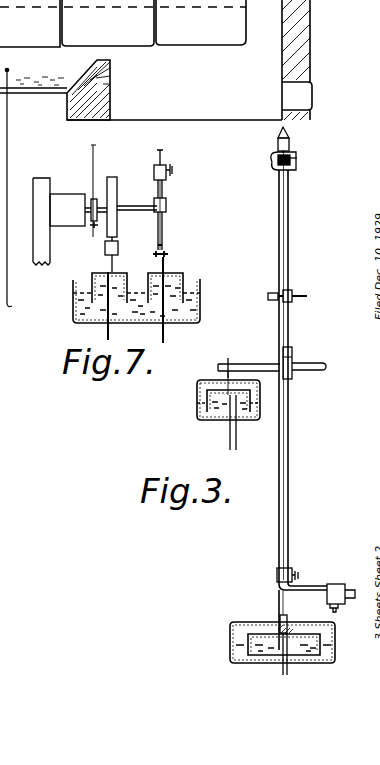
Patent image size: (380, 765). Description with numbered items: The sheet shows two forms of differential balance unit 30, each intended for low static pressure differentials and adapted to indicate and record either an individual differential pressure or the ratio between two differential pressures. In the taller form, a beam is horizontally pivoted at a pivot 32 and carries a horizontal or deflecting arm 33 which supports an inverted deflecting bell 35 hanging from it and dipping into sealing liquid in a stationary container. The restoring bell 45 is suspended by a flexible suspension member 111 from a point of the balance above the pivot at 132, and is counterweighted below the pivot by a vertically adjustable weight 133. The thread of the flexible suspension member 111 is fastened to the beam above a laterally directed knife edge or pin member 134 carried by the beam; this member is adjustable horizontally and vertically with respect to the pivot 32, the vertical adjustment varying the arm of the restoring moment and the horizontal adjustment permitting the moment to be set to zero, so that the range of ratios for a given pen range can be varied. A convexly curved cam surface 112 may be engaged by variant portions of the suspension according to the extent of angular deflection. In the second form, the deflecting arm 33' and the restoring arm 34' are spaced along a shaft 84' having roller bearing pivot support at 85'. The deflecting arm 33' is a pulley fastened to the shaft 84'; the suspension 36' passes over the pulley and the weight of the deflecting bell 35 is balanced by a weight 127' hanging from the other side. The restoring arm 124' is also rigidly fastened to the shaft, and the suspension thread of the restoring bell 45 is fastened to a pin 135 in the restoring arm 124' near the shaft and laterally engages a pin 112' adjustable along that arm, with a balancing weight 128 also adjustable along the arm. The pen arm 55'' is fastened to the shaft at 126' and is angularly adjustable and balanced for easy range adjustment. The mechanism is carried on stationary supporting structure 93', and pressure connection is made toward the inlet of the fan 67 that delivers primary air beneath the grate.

In FIG. 7, the fan 67 is at (8, 165).
In FIG. 7, the stationary supporting structure 93' is at (31, 221).
In FIG. 7, the roller bearing pivot support 85' is at (67, 210).
In FIG. 7, the pen arm fastening 126' is at (82, 227).
In FIG. 7, the pen arm 55'' is at (107, 191).
In FIG. 7, the deflecting arm 33' is at (125, 209).
In FIG. 7, the shaft 84' is at (137, 198).
In FIG. 7, the suspension 36' is at (101, 254).
In FIG. 7, the weight 127' is at (127, 298).
In FIG. 7, the balancing weight 128 is at (173, 168).
In FIG. 7, the restoring arm 124' is at (181, 195).
In FIG. 7, the pin 135 is at (164, 222).
In FIG. 7, the flexible suspension member 111 is at (165, 231).
In FIG. 3, the flexible suspension member 111 is at (280, 540).
In FIG. 7, the restoring arm 34' is at (150, 246).
In FIG. 7, the pin 112' is at (181, 294).
In FIG. 7, the restoring bell 45 is at (183, 280).
In FIG. 7, the deflecting bell 35 is at (73, 289).
In FIG. 3, the deflecting bell 35 is at (198, 408).
In FIG. 3, the differential balance unit 30 is at (292, 405).
In FIG. 3, the suspension point above pivot 132 is at (297, 162).
In FIG. 3, the knife edge or pin member 134 is at (279, 294).
In FIG. 3, the convexly curved cam surface 112 is at (302, 287).
In FIG. 3, the horizontal or deflecting arm 33 is at (249, 361).
In FIG. 3, the pivot 32 is at (296, 364).
In FIG. 3, the vertically adjustable weight 133 is at (298, 575).